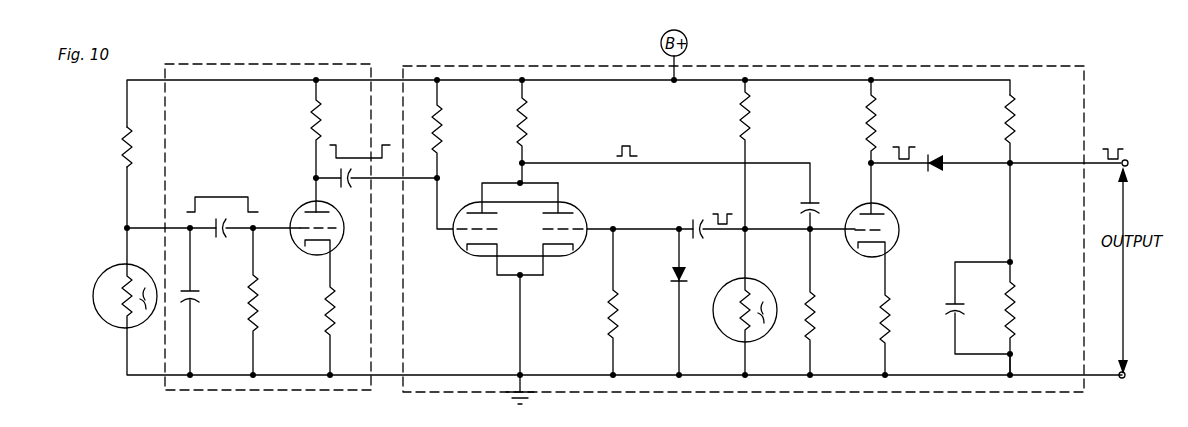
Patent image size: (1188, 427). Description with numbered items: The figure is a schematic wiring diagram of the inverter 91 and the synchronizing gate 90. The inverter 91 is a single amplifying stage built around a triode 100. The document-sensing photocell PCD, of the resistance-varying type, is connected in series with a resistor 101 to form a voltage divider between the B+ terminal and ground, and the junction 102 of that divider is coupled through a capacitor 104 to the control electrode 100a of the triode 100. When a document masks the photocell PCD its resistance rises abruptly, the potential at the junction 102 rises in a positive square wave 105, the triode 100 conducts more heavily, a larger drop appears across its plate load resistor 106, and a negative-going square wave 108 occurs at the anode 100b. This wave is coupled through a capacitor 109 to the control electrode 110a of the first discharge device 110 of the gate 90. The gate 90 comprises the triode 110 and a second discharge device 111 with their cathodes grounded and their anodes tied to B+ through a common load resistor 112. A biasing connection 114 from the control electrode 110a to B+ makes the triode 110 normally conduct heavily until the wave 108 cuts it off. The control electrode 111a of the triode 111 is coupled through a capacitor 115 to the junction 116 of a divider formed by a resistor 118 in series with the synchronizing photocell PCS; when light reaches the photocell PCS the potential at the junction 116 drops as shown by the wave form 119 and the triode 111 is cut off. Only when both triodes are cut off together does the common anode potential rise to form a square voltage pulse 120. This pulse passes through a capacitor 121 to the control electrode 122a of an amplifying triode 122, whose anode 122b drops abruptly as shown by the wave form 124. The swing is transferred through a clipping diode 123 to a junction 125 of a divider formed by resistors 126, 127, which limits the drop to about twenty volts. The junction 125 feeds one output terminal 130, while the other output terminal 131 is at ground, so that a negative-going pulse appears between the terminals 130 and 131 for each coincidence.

The synchronizing gate 90 is at (582, 394).
The inverter 91 is at (332, 394).
The triode 100 is at (313, 276).
The control electrode 100a is at (305, 248).
The anode 100b is at (320, 212).
The resistor 101 is at (125, 140).
The junction 102 is at (124, 229).
The capacitor 104 is at (221, 240).
The square wave 105 is at (210, 196).
The plate load resistor 106 is at (312, 102).
The negative-going square wave voltage variation 108 is at (352, 150).
The capacitor 109 is at (340, 176).
The first discharge device 110 is at (505, 217).
The control electrode 110a is at (466, 248).
The second discharge device 111 is at (578, 230).
The control electrode 111a is at (584, 250).
The common load resistor 112 is at (526, 114).
The biasing connection 114 is at (441, 118).
The capacitor 115 is at (690, 226).
The junction 116 is at (748, 231).
The resistor 118 is at (749, 106).
The wave form 119 is at (718, 213).
The square voltage pulse 120 is at (636, 134).
The capacitor 121 is at (806, 204).
The amplifying triode 122 is at (873, 227).
The control electrode 122a is at (857, 250).
The anode 122b is at (878, 214).
The clipping diode 123 is at (938, 158).
The wave form 124 is at (904, 147).
The junction 125 is at (1013, 161).
The resistor 126 is at (1014, 112).
The resistor 127 is at (1013, 318).
The output terminal 130 is at (1128, 164).
The output terminal 131 is at (1126, 374).
The document-sensing photocell PCD is at (106, 314).
The synchronizing photocell PCS is at (728, 326).